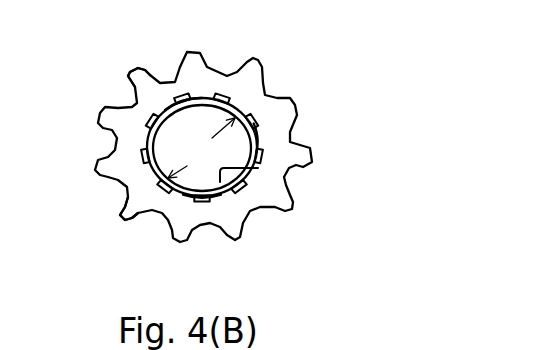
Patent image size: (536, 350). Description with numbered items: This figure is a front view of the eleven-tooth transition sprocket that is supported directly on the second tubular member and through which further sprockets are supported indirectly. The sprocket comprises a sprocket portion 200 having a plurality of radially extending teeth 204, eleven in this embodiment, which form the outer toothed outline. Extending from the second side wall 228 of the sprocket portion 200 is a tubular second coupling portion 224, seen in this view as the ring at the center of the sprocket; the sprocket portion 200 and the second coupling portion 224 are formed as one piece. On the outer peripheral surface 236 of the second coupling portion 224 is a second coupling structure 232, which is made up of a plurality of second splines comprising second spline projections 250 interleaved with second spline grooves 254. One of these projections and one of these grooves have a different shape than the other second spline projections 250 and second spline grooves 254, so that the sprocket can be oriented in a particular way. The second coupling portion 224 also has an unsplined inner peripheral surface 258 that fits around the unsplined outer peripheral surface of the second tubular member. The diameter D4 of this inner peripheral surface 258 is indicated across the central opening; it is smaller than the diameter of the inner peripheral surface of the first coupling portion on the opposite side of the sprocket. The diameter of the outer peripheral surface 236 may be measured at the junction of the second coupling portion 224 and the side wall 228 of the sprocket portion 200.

The sprocket portion 200 is at (290, 241).
The teeth 204 is at (127, 73).
The second coupling portion 224 is at (181, 196).
The second side wall 228 is at (138, 203).
The second coupling structure 232 is at (249, 103).
The outer peripheral surface 236 is at (264, 137).
The second spline projections 250 is at (267, 162).
The second spline grooves 254 is at (263, 163).
The unsplined inner peripheral surface 258 is at (220, 182).
The diameter of inner peripheral surface D4 is at (201, 148).